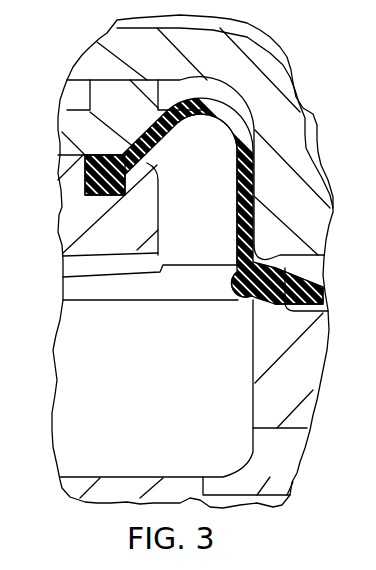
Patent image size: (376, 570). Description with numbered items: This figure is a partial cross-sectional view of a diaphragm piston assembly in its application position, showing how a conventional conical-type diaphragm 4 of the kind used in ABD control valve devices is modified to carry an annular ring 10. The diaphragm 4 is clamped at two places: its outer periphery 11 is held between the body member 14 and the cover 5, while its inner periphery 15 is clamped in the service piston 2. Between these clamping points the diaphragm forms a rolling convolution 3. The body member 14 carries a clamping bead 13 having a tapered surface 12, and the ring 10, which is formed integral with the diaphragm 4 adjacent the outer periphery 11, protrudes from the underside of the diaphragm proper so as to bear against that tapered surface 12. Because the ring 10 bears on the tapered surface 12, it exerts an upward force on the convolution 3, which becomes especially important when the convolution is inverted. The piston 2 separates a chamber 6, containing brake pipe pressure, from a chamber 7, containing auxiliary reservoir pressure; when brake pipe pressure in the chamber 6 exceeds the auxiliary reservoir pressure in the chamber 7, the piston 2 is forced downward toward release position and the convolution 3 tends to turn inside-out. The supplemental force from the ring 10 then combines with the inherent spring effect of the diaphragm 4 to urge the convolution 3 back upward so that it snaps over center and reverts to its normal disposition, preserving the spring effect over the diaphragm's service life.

The piston 2 is at (117, 222).
The convolution 3 is at (253, 126).
The diaphragm 4 is at (247, 169).
The cover 5 is at (263, 88).
The chamber 6 is at (193, 97).
The chamber 7 is at (83, 401).
The annular ring 10 is at (245, 288).
The outer periphery 11 is at (312, 284).
The tapered surface 12 is at (316, 256).
The clamping bead 13 is at (322, 311).
The body member 14 is at (290, 393).
The inner periphery 15 is at (85, 180).